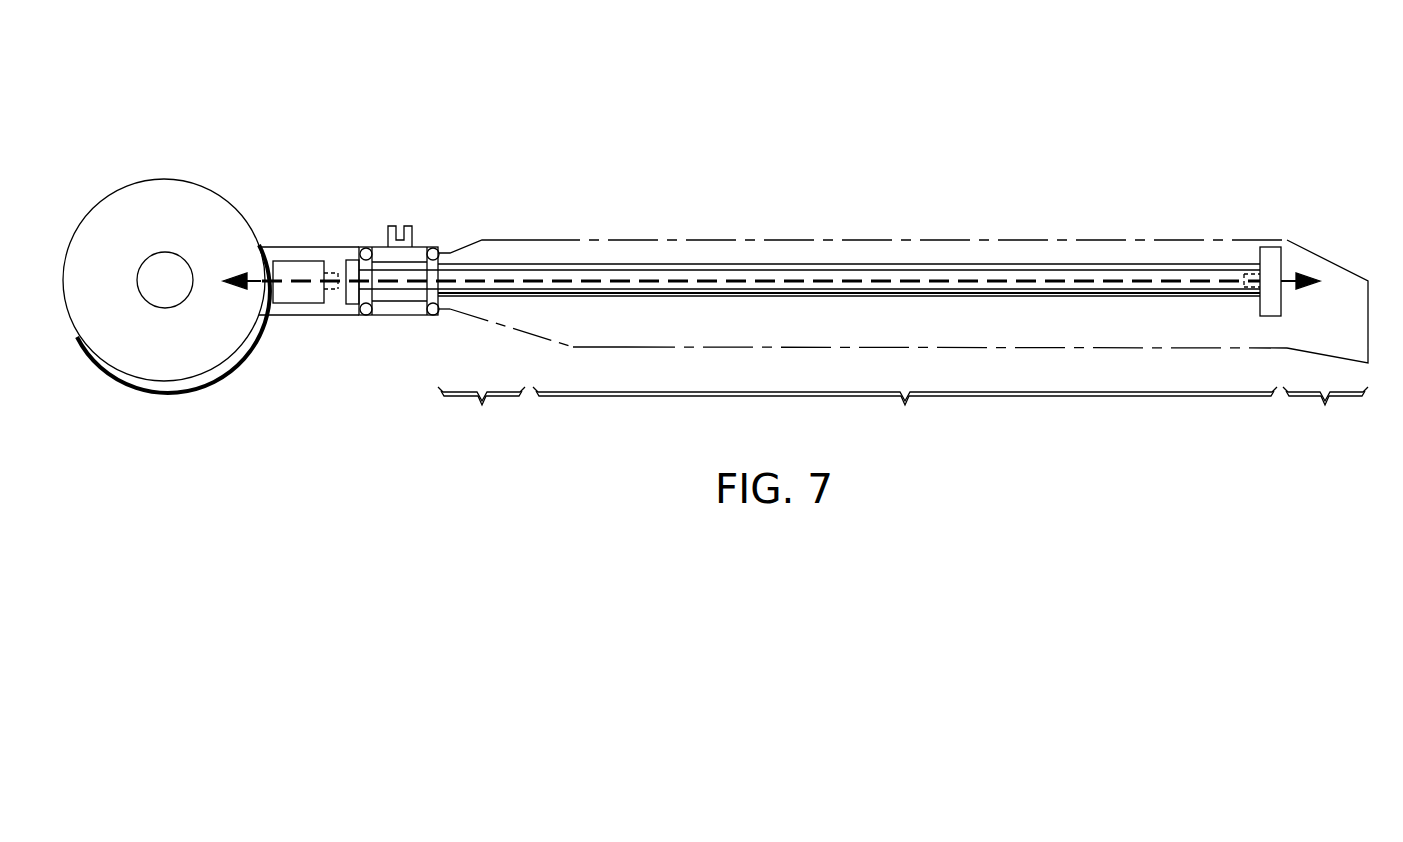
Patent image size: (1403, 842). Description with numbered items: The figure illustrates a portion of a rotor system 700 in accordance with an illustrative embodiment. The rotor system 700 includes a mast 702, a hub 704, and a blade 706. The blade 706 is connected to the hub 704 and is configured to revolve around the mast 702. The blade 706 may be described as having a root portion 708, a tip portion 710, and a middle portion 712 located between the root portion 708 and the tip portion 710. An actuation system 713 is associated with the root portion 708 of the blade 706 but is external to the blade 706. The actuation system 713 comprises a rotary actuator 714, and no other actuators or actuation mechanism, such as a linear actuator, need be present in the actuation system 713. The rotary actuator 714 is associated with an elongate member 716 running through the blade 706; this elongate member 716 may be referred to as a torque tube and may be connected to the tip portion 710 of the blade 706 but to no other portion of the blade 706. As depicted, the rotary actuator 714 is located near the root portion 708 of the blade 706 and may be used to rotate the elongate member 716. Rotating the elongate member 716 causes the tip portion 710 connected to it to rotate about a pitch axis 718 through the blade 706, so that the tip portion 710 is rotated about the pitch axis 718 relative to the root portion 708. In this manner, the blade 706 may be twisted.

The rotor system 700 is at (210, 111).
The mast 702 is at (161, 265).
The hub 704 is at (163, 382).
The blade 706 is at (1068, 240).
The root portion 708 is at (481, 414).
The tip portion 710 is at (1325, 414).
The middle portion 712 is at (905, 414).
The actuation system 713 is at (298, 304).
The rotary actuator 714 is at (300, 261).
The elongate member 716 is at (752, 274).
The pitch axis 718 is at (870, 283).